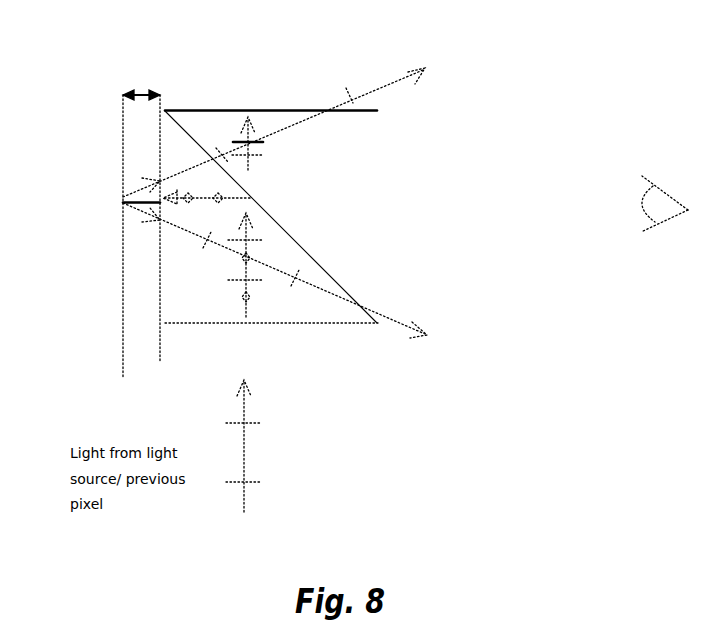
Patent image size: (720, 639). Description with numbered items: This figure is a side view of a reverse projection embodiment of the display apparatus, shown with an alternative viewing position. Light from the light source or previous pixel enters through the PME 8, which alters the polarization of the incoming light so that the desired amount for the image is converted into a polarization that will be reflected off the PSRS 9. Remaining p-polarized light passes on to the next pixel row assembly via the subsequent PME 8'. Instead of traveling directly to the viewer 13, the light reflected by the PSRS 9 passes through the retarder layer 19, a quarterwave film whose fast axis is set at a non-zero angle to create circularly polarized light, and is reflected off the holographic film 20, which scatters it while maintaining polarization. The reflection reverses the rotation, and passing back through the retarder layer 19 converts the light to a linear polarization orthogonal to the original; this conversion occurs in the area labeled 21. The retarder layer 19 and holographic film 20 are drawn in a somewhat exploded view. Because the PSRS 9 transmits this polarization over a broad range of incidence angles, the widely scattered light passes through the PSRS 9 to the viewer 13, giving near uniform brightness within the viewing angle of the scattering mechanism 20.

The PME 8 is at (275, 333).
The subsequent PME 8' is at (274, 123).
The PSRS 9 is at (308, 218).
The viewer 13 is at (668, 247).
The retarder layer 19 is at (163, 94).
The holographic film 20 is at (104, 160).
The conversion area 21 is at (141, 87).